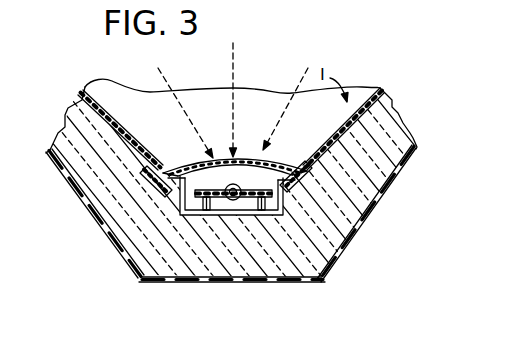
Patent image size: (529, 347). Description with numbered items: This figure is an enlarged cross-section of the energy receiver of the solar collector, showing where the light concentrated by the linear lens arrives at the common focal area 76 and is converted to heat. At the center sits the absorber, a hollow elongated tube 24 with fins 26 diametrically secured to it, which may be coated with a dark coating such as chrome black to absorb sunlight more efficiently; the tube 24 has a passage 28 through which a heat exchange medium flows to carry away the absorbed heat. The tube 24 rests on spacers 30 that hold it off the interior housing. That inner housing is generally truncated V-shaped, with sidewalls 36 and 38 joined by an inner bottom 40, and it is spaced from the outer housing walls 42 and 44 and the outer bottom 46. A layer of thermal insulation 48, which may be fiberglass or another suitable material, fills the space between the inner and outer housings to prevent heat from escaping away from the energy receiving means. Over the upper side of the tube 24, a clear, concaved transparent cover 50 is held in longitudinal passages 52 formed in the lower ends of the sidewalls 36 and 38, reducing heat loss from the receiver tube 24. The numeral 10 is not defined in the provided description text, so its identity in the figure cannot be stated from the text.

The solar collector 10 is at (400, 178).
The hollow elongated tube 24 is at (230, 205).
The fins 26 is at (197, 168).
The passage 28 is at (233, 207).
The spacers 30 is at (207, 213).
The sidewall 36 is at (361, 90).
The sidewall 38 is at (108, 106).
The inner bottom 40 is at (180, 206).
The outer housing wall 42 is at (393, 197).
The outer housing wall 44 is at (73, 188).
The bottom 46 is at (306, 283).
The layer of thermal insulation 48 is at (107, 212).
The transparent cover 50 is at (283, 157).
The longitudinal passages 52 is at (143, 187).
The common focal area 76 is at (247, 148).